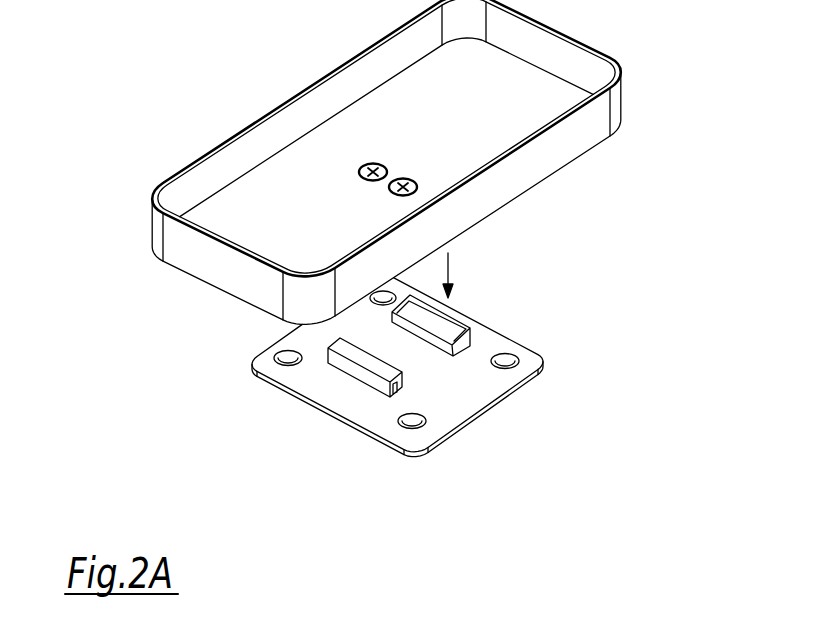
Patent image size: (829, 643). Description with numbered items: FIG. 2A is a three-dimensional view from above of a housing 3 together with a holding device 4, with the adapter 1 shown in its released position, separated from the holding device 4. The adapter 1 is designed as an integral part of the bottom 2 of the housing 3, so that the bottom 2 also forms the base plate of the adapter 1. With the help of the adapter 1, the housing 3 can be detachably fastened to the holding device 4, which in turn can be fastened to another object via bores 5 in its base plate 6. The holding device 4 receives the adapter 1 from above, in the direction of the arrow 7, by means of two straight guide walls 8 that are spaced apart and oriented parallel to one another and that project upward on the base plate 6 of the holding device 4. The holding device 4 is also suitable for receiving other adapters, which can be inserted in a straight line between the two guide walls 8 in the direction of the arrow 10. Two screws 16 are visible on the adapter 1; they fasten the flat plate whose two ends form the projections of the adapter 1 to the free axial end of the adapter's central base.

The adapter 1 is at (477, 243).
The bottom 2 is at (543, 100).
The housing 3 is at (202, 158).
The holding device 4 is at (448, 410).
The bores 5 is at (279, 355).
The base plate 6 is at (358, 427).
The arrow 7 is at (450, 266).
The guide walls 8 is at (352, 374).
The arrow 10 is at (527, 425).
The screws 16 is at (409, 174).